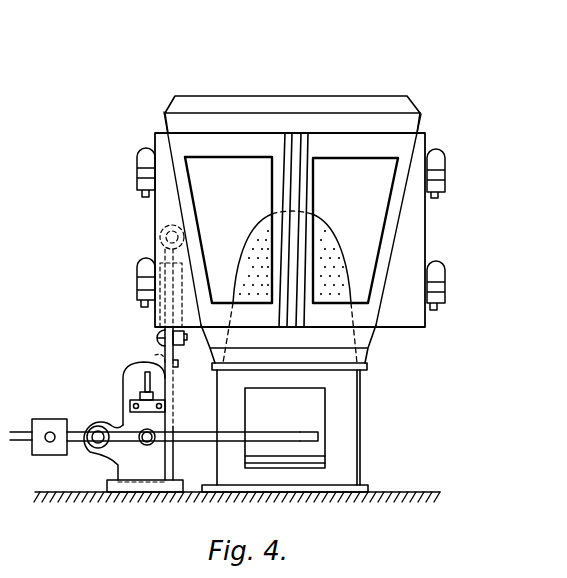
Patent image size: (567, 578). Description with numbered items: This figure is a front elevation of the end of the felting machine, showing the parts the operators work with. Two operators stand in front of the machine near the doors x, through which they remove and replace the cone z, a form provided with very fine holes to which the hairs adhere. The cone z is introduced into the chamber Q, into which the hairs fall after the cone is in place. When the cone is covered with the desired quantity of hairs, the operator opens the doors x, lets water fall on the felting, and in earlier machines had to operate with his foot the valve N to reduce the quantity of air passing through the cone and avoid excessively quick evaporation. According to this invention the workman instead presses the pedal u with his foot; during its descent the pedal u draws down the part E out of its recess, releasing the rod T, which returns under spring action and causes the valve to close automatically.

The doors x is at (272, 221).
The chamber Q is at (355, 230).
The cone z is at (248, 272).
The rod T is at (135, 380).
The part E is at (157, 421).
The valve N is at (285, 428).
The pedal u is at (303, 437).